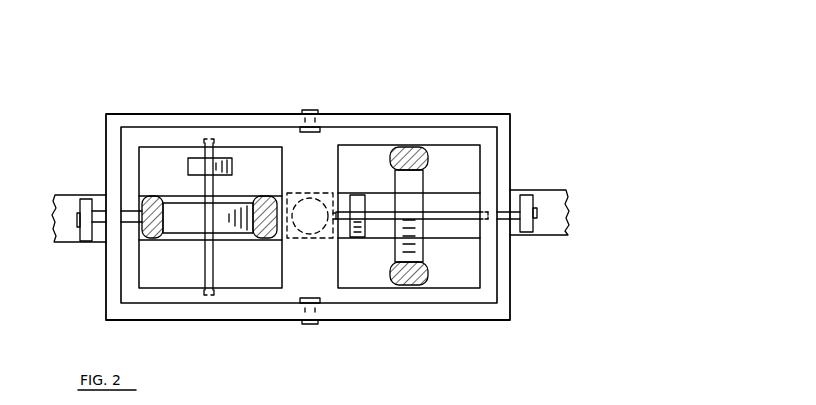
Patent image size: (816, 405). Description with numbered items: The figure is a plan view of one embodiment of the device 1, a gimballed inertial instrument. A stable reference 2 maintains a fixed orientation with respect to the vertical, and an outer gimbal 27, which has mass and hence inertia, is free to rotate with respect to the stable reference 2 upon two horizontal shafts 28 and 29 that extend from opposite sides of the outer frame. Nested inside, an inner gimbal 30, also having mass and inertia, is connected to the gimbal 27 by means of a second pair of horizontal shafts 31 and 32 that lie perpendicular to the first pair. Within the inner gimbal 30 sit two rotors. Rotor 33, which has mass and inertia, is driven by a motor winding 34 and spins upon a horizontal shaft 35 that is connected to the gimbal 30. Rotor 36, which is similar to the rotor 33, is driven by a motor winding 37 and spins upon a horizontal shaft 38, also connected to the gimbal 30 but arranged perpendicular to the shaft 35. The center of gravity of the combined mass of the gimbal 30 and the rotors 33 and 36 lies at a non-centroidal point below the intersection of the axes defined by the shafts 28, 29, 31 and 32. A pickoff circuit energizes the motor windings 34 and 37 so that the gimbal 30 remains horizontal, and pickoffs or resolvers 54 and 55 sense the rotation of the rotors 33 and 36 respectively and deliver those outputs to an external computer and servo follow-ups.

The device 1 is at (383, 82).
The stable reference 2 is at (553, 230).
The gimbal 27 is at (458, 115).
The horizontal shaft 28 is at (98, 222).
The horizontal shaft 29 is at (513, 213).
The gimbal 30 is at (363, 138).
The horizontal shaft 31 is at (313, 128).
The horizontal shaft 32 is at (300, 302).
The rotor 33 is at (177, 222).
The motor winding 34 is at (153, 200).
The horizontal shaft 35 is at (207, 275).
The rotor 36 is at (413, 198).
The motor winding 37 is at (430, 272).
The horizontal shaft 38 is at (457, 210).
The resolver 54 is at (231, 168).
The resolver 55 is at (357, 200).